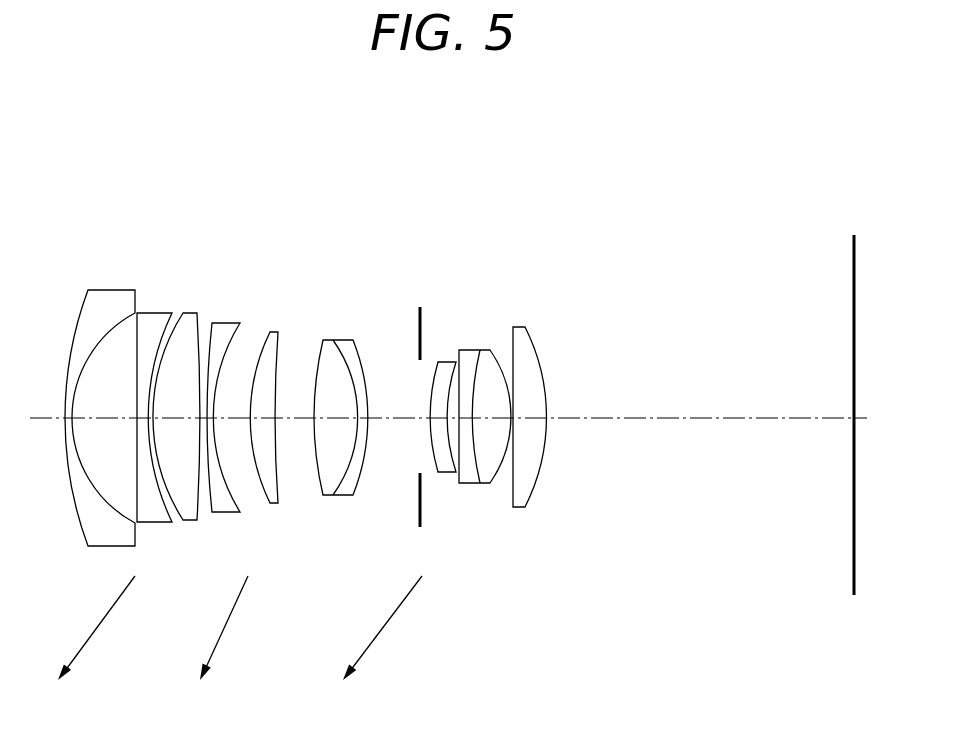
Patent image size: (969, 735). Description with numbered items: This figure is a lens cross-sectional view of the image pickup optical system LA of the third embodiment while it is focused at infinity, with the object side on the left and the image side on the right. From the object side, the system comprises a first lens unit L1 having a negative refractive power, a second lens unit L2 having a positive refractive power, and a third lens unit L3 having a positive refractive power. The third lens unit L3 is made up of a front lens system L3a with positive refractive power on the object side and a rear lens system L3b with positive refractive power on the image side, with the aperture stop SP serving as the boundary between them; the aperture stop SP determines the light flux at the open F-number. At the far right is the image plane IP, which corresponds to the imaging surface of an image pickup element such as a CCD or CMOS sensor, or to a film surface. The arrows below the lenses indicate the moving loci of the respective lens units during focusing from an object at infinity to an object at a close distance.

The image pickup optical system LA is at (304, 318).
The first lens unit L1 is at (128, 263).
The second lens unit L2 is at (244, 263).
The third lens unit L3 is at (423, 203).
The 3a-th lens system L3a is at (342, 262).
The 3b-th lens system L3b is at (487, 262).
The aperture stop SP is at (418, 326).
The image plane IP is at (853, 257).